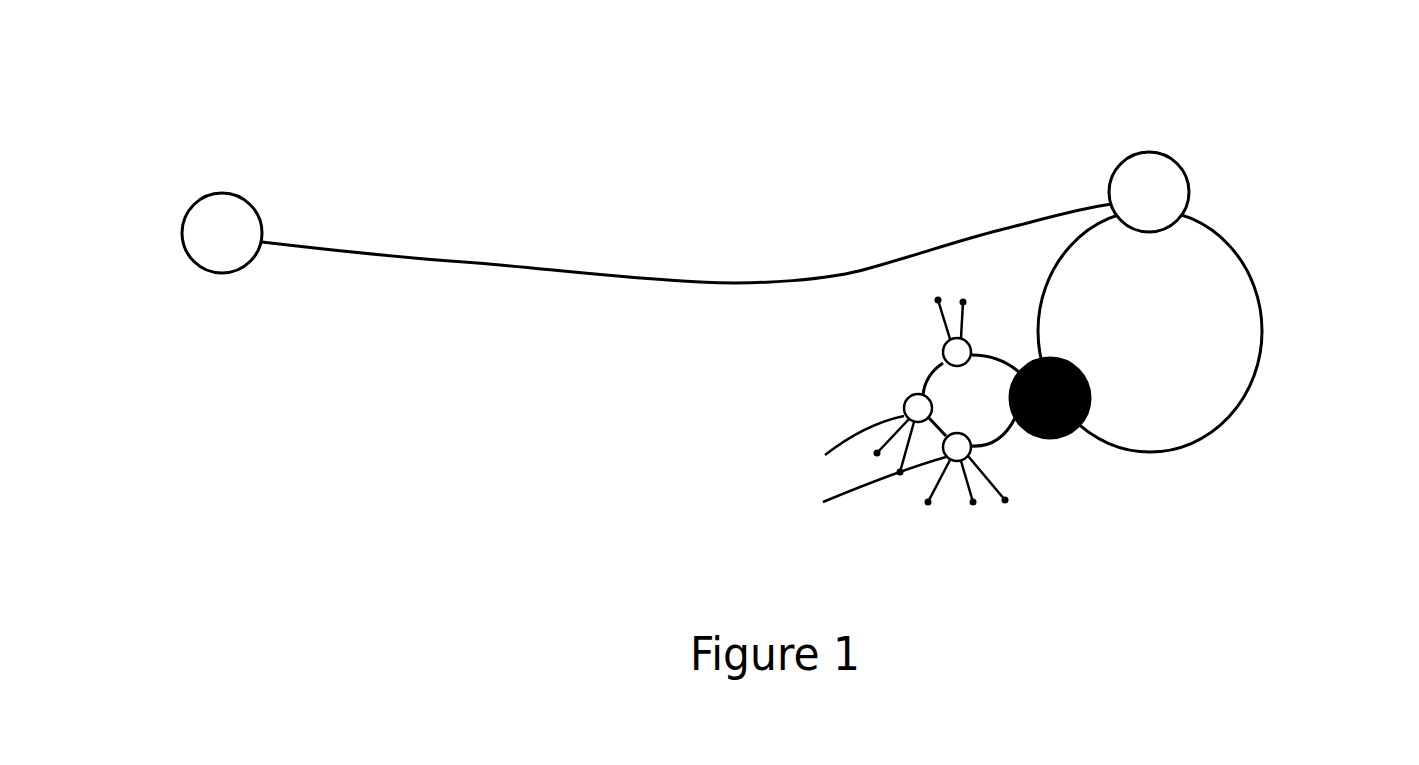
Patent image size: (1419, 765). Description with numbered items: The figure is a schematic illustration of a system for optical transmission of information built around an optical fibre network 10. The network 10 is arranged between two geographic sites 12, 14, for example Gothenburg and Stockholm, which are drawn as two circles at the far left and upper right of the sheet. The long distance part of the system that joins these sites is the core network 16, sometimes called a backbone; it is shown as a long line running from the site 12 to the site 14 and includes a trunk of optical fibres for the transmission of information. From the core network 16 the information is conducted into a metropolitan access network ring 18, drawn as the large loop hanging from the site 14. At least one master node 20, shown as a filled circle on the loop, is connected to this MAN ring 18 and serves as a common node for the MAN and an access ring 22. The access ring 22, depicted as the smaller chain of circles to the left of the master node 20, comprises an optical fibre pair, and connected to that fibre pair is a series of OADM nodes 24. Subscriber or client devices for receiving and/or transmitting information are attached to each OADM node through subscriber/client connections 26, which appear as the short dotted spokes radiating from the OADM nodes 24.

The optical fibre network 10 is at (688, 53).
The geographic site 12 is at (182, 224).
The geographic site 14 is at (1143, 153).
The core network 16 is at (477, 263).
The metropolitan access network ring 18 is at (1263, 320).
The master node 20 is at (1068, 434).
The access ring 22 is at (908, 380).
The OADM nodes 24 is at (942, 346).
The subscriber/client connections 26 is at (940, 298).